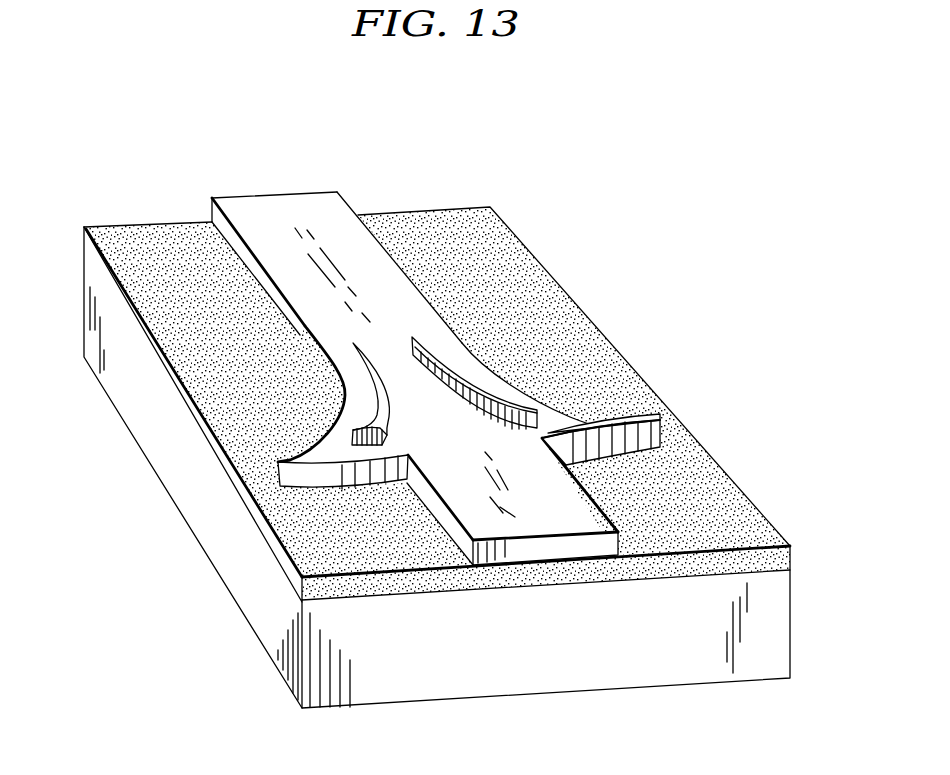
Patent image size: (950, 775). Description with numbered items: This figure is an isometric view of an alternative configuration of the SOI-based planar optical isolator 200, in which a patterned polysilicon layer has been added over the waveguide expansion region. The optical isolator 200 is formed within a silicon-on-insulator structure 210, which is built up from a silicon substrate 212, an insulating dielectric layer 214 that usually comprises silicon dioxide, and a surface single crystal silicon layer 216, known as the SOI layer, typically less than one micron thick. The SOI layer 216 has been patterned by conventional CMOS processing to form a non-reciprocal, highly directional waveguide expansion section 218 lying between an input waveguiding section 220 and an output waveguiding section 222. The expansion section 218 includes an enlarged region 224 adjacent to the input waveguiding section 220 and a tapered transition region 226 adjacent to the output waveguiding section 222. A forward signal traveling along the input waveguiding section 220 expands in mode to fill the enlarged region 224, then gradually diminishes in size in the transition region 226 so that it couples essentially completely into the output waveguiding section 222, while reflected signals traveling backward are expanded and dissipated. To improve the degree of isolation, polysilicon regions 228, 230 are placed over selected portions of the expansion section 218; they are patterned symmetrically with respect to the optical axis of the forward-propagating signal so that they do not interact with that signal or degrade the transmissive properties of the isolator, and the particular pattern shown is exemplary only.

The optical isolator 200 is at (702, 195).
The silicon-on-insulator structure 210 is at (618, 531).
The silicon substrate 212 is at (127, 392).
The insulating dielectric layer 214 is at (85, 253).
The surface single crystal silicon layer 216 is at (133, 230).
The waveguide expansion section 218 is at (417, 420).
The input waveguiding section 220 is at (560, 518).
The output waveguiding section 222 is at (283, 205).
The enlarged region 224 is at (597, 428).
The tapered transition region 226 is at (390, 350).
The polysilicon region 228 is at (377, 402).
The polysilicon region 230 is at (477, 393).